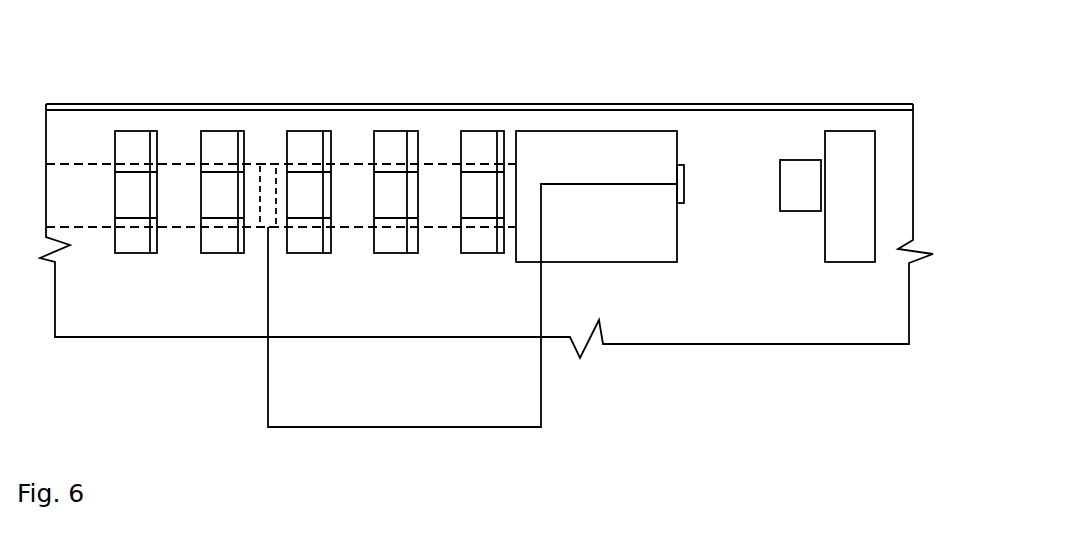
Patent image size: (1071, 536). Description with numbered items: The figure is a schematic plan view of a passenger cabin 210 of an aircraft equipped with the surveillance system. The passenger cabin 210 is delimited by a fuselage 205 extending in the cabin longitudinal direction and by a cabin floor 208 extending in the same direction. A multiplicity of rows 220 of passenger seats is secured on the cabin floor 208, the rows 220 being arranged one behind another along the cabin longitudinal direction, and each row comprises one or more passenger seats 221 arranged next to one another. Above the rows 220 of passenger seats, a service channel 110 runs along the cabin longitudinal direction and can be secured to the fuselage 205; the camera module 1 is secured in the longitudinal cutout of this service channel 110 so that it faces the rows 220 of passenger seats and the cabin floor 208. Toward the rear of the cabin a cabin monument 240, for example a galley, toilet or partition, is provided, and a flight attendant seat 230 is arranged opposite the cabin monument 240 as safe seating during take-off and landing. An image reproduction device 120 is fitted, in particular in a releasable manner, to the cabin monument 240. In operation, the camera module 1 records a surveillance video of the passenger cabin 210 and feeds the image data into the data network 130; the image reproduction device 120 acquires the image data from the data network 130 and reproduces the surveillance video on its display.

The camera module 1 is at (268, 158).
The service channel 110 is at (75, 163).
The image reproduction device 120 is at (684, 196).
The data network 130 is at (541, 407).
The fuselage 205 is at (428, 106).
The cabin floor 208 is at (718, 322).
The passenger cabin 210 is at (127, 311).
The rows of passenger seats 220 is at (143, 122).
The passenger seats 221 is at (140, 147).
The flight attendant seat 230 is at (802, 167).
The cabin monument 240 is at (588, 130).